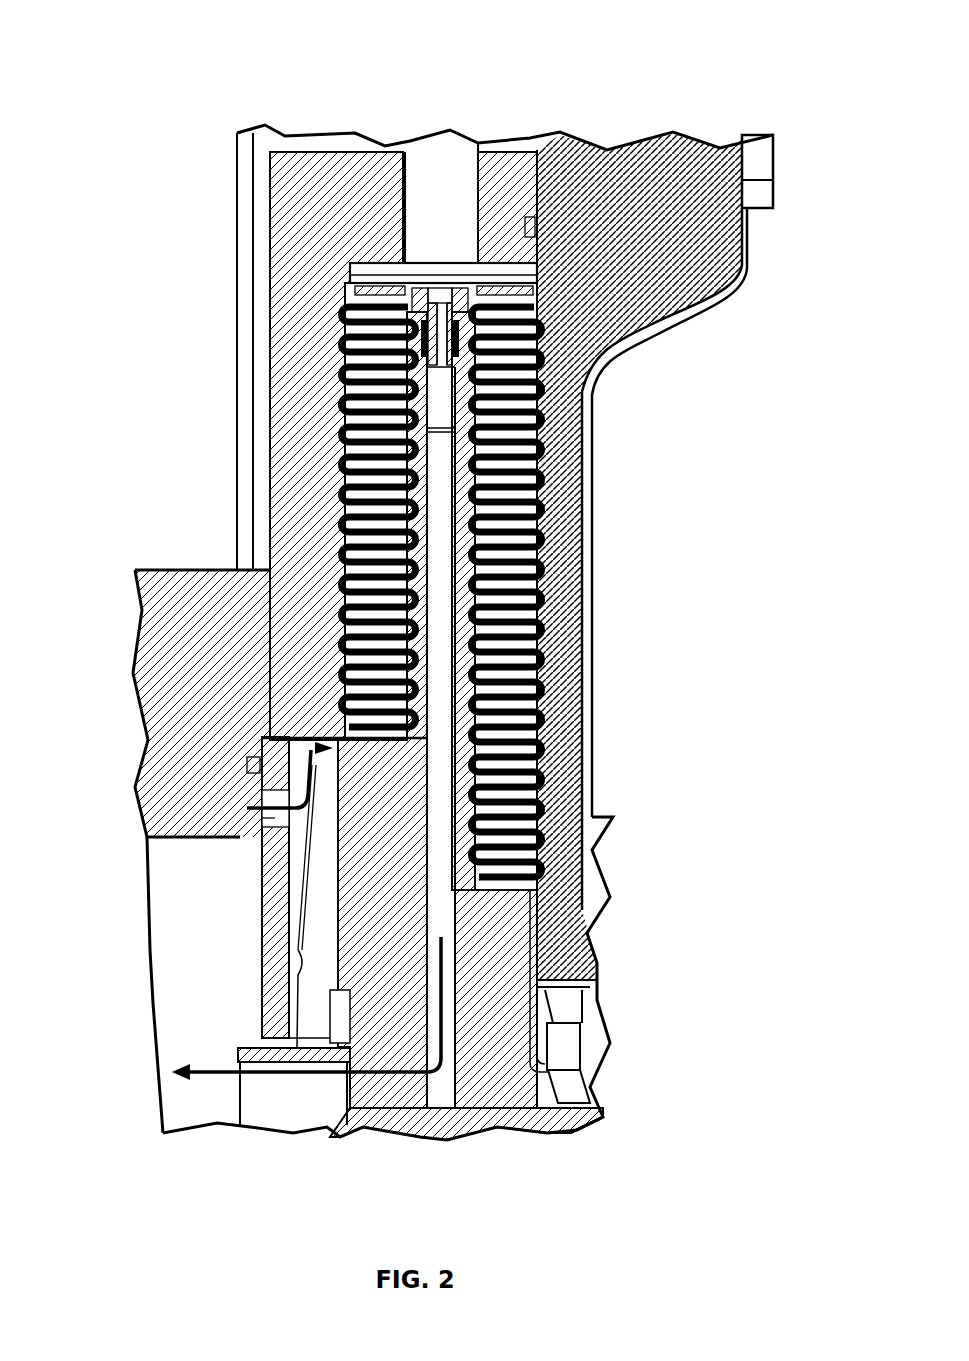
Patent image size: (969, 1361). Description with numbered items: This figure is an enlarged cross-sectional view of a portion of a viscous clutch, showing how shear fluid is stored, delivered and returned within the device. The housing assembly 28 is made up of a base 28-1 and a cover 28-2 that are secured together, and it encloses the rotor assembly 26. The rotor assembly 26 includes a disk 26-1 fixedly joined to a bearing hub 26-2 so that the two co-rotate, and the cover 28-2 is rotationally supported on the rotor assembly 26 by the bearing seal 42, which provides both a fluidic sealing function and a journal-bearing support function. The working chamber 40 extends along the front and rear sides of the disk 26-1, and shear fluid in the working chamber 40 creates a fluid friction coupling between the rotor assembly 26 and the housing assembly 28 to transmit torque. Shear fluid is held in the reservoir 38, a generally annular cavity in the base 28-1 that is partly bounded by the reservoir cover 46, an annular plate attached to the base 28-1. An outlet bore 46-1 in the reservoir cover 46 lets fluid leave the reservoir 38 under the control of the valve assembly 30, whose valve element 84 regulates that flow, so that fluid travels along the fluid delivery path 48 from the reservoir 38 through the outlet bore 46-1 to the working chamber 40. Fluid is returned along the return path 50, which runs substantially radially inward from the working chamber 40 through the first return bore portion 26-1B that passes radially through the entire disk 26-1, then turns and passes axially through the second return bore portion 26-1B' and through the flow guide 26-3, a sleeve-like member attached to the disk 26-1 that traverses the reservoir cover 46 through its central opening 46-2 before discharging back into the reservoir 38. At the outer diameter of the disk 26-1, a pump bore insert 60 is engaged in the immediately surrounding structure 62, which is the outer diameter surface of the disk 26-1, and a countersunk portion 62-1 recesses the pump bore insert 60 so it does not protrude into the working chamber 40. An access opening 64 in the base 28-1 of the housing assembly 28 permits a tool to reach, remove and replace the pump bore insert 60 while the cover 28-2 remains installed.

The housing assembly 28 is at (300, 222).
The base 28-1 is at (343, 172).
The cover 28-2 is at (633, 183).
The access opening 64 is at (437, 168).
The immediately surrounding structure 62 is at (472, 290).
The countersunk portion 62-1 is at (468, 323).
The working chamber 40 is at (370, 283).
The pump bore insert 60 is at (488, 373).
The fluid delivery path 48 is at (300, 738).
The first return bore portion 26-1B is at (563, 601).
The valve assembly 30 is at (305, 873).
The outlet bore 46-1 is at (260, 787).
The valve element 84 is at (290, 847).
The reservoir 38 is at (178, 930).
The rotor assembly 26 is at (505, 955).
The reservoir cover 46 is at (257, 1005).
The disk 26-1 is at (492, 1022).
The central opening 46-2 is at (238, 1047).
The return path 50 is at (222, 1092).
The flow guide 26-3 is at (278, 1093).
The second return bore portion 26-1B' is at (466, 1152).
The bearing seal 42 is at (565, 1085).
The bearing hub 26-2 is at (598, 1122).